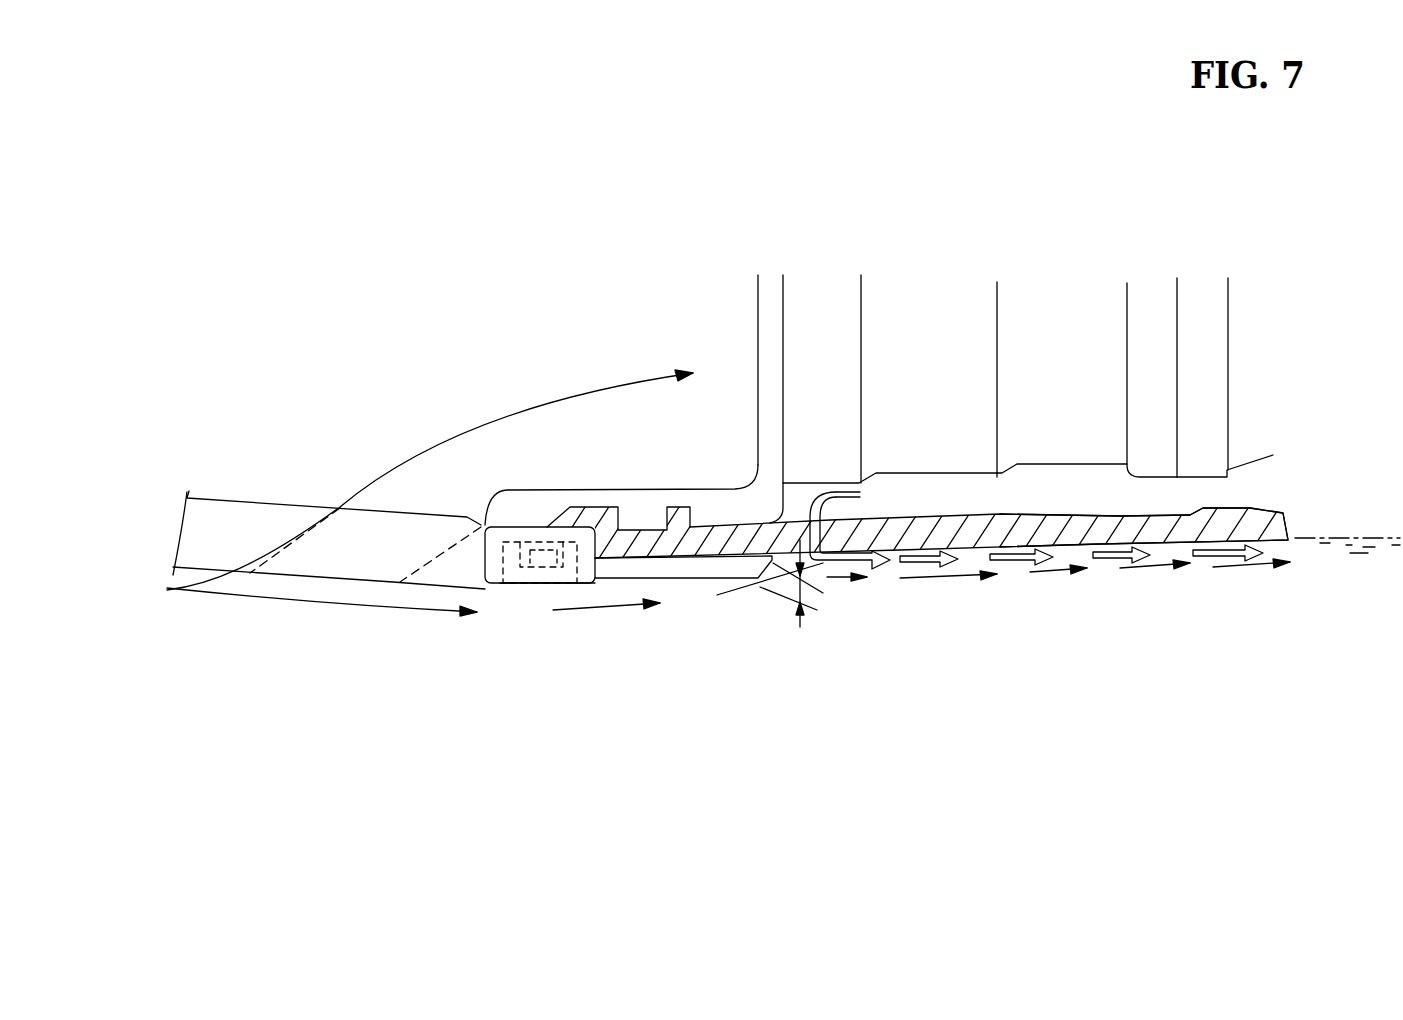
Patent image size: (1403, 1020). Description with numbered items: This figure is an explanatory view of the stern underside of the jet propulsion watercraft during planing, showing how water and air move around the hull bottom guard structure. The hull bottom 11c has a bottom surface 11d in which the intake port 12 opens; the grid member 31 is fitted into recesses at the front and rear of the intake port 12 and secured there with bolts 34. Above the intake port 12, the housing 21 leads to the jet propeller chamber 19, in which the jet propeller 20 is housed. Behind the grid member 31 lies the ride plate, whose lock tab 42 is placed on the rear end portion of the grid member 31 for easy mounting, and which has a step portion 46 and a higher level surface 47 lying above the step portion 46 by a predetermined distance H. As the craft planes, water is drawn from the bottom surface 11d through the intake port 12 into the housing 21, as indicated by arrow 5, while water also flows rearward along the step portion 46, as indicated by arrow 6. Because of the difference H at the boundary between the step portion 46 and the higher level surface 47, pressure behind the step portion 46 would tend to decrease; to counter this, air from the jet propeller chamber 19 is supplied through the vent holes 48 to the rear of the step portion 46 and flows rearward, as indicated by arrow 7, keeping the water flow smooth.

The hull bottom 11c is at (543, 588).
The bottom surface 11d is at (487, 588).
The intake port 12 is at (490, 517).
The jet propeller chamber 19 is at (1058, 497).
The jet propeller 20 is at (820, 305).
The housing 21 is at (912, 303).
The grid member 31 is at (315, 580).
The bolts 34 is at (523, 545).
The lock tab 42 is at (590, 507).
The step portion 46 is at (697, 578).
The higher level surface 47 is at (1072, 548).
The vent holes 48 is at (831, 487).
The arrow 5 is at (430, 480).
The arrow 6 is at (413, 616).
The arrow 7 is at (847, 553).
The predetermined distance H is at (791, 598).